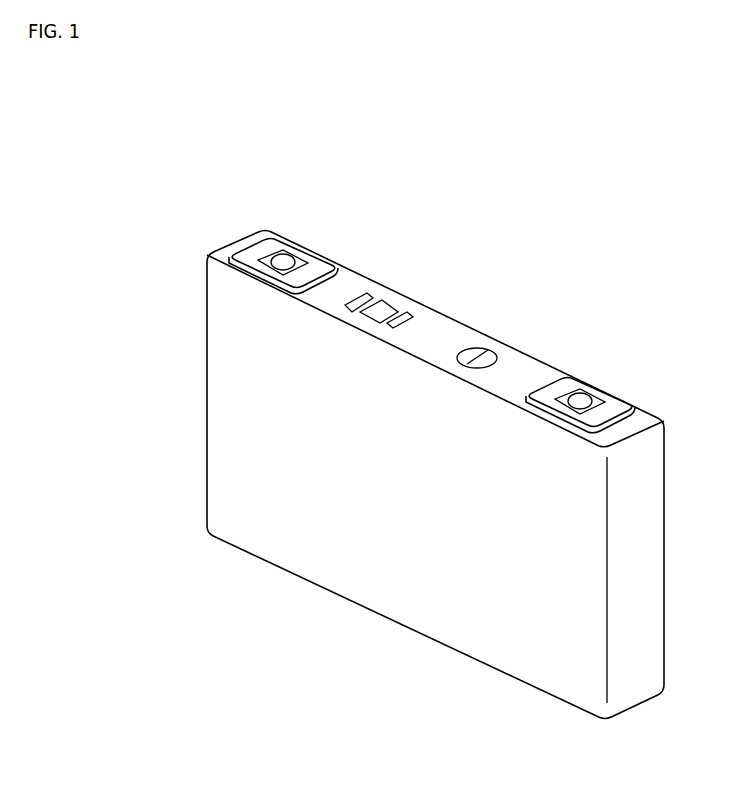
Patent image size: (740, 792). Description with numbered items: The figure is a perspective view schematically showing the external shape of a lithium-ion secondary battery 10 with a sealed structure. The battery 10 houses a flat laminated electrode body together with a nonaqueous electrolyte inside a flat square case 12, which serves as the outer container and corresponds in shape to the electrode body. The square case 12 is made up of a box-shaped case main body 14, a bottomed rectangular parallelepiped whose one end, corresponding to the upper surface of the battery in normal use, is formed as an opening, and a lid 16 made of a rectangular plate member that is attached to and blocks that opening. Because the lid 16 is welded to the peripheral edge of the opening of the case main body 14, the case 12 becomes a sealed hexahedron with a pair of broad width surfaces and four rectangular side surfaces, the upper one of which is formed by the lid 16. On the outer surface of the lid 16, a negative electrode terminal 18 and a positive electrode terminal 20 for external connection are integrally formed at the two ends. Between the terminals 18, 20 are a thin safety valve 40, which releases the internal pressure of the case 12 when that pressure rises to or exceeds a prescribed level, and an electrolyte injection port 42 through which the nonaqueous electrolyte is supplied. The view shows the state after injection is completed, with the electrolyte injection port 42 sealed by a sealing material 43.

The lithium-ion secondary battery 10 is at (655, 215).
The square case 12 is at (460, 592).
The case main body 14 is at (353, 580).
The lid 16 is at (443, 322).
The negative electrode terminal 18 is at (287, 260).
The positive electrode terminal 20 is at (585, 398).
The safety valve 40 is at (490, 362).
The electrolyte injection port 42 is at (395, 312).
The sealing material 43 is at (382, 305).